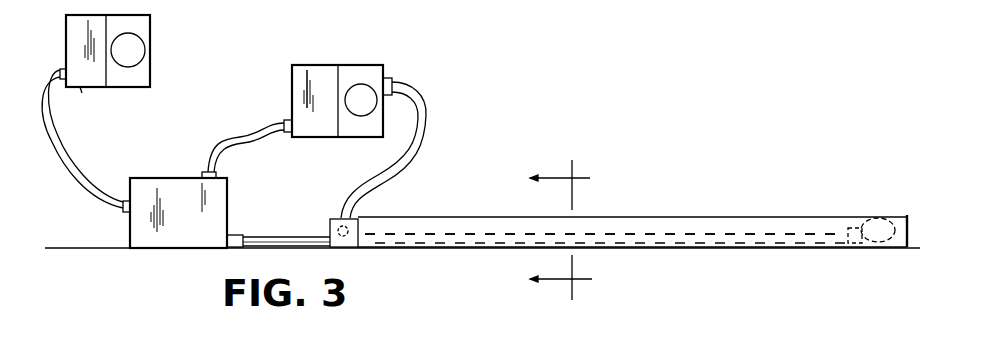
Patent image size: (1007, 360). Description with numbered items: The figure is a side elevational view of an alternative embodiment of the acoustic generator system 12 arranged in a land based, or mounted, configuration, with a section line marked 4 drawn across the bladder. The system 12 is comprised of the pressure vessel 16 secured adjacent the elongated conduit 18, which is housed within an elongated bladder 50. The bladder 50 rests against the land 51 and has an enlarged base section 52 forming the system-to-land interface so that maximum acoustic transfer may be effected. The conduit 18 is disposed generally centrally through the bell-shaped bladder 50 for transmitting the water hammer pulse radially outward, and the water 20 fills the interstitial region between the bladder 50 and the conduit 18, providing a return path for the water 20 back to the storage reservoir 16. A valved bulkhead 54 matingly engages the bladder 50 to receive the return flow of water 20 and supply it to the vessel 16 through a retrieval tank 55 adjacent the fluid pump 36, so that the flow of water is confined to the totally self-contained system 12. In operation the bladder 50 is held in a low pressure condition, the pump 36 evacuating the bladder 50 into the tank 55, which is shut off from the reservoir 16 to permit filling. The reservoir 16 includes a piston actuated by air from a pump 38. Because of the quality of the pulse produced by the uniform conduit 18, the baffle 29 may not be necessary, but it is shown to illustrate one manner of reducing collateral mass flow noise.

The acoustic generator system 12 is at (214, 63).
The pressure vessel 16 is at (172, 193).
The elongated conduit 18 is at (281, 236).
The water 20 is at (479, 222).
The baffle 29 is at (878, 216).
The fluid pump 36 is at (362, 95).
The pump 38 is at (131, 49).
The elongated bladder 50 is at (410, 229).
The land 51 is at (917, 247).
The enlarged base section 52 is at (712, 243).
The valved bulkhead 54 is at (334, 238).
The retrieval tank 55 is at (321, 85).
The section line 4- 4 is at (561, 228).